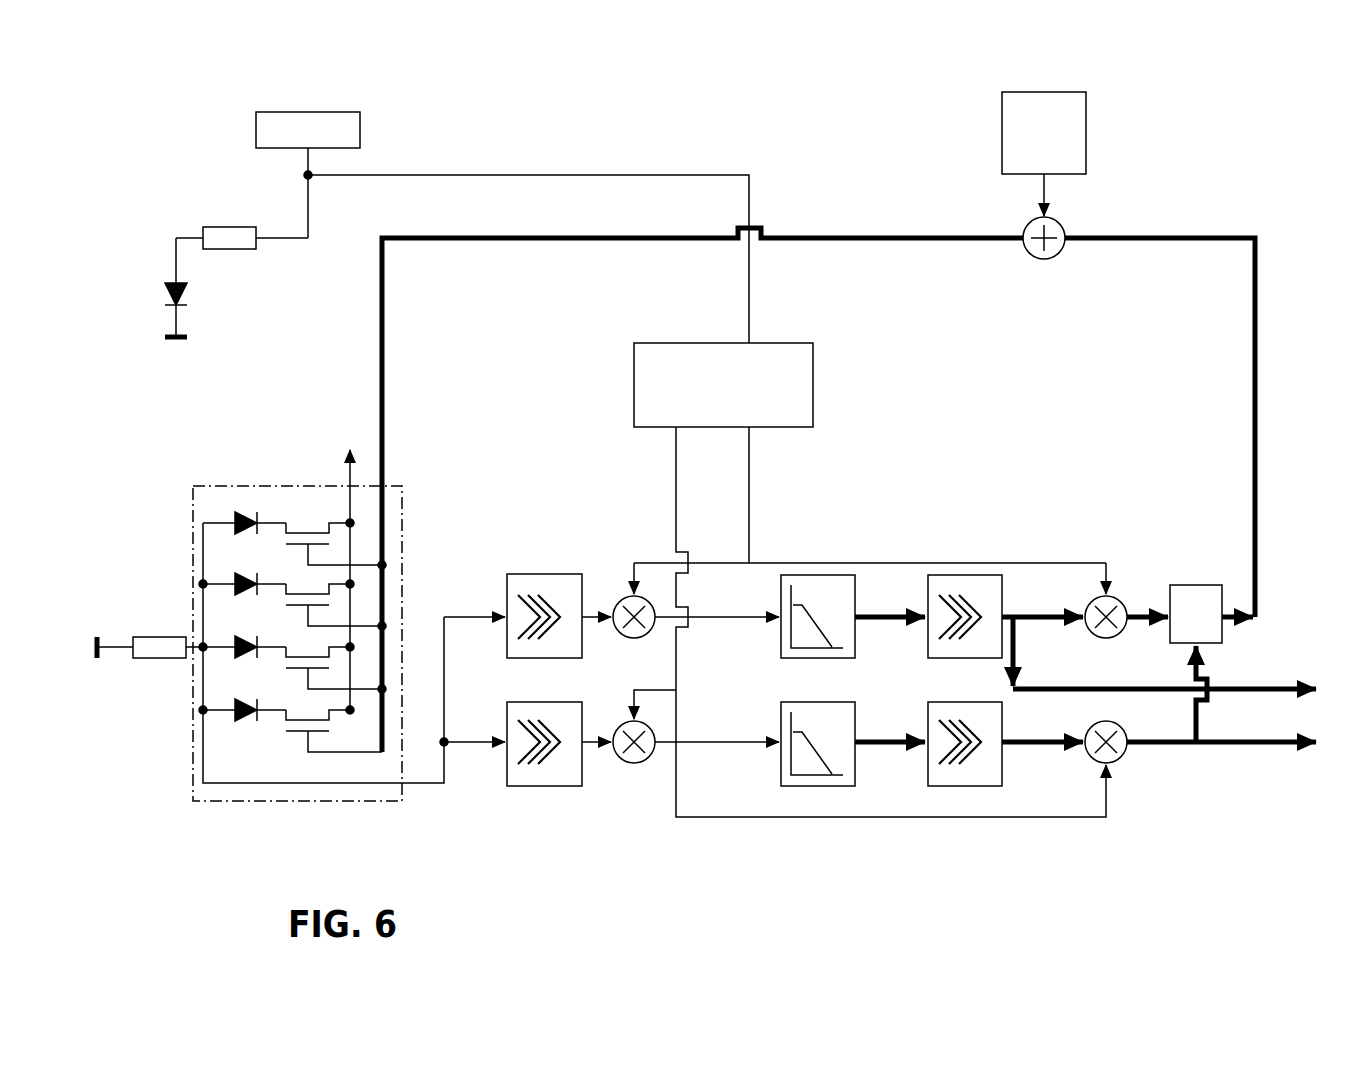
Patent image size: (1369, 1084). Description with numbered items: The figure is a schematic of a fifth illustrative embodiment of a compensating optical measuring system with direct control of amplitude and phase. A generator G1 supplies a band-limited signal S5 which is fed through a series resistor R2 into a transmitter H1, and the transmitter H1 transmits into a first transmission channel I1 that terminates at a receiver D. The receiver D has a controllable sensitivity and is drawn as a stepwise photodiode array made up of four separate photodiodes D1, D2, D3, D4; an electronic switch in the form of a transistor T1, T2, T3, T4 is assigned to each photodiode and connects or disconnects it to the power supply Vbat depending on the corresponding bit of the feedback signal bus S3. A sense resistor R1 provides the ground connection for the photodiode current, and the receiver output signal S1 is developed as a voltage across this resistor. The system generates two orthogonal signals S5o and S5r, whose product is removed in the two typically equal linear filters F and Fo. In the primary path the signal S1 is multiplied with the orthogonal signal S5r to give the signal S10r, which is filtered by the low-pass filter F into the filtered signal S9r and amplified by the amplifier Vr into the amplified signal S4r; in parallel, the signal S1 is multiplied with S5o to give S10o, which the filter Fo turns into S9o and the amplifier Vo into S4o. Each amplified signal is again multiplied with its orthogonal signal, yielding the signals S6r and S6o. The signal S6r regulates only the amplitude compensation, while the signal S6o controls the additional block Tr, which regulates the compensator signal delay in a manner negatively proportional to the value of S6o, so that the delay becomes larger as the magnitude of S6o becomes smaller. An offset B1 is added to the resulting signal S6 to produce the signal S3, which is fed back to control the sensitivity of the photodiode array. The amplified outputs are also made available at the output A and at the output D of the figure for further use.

The generator G1 is at (308, 175).
The signal S5 is at (528, 244).
The series resistor R2 is at (242, 225).
The transmitter H1 is at (151, 287).
The first transmission channel I1 is at (243, 485).
The power supply Vbat is at (324, 471).
The receiver D is at (297, 654).
The receiver output signal S1 is at (467, 715).
The sense resistor R1 is at (150, 634).
The photodiode D1 is at (244, 517).
The photodiode D2 is at (244, 578).
The photodiode D3 is at (244, 641).
The photodiode D4 is at (244, 704).
The electronic switch T1 is at (331, 531).
The electronic switch T2 is at (328, 593).
The electronic switch T3 is at (328, 656).
The electronic switch T4 is at (326, 716).
The signal S3 is at (702, 475).
The offset B1 is at (1044, 175).
The signal S6 is at (1160, 407).
The orthogonal signal S5r is at (866, 510).
The orthogonal signal S5o is at (869, 632).
The signal S10r is at (717, 629).
The signal S10o is at (717, 757).
The filter F is at (818, 633).
The filter Fo is at (818, 758).
The filtered signal S9r is at (890, 632).
The filtered signal S9o is at (890, 757).
The amplifier Vr is at (965, 633).
The amplifier Vo is at (965, 758).
The amplified signal S4r is at (1042, 651).
The amplified signal S4o is at (1042, 757).
The output A is at (1164, 667).
The signal S6r is at (1147, 636).
The block Tr is at (1173, 572).
The signal S6o is at (1221, 710).